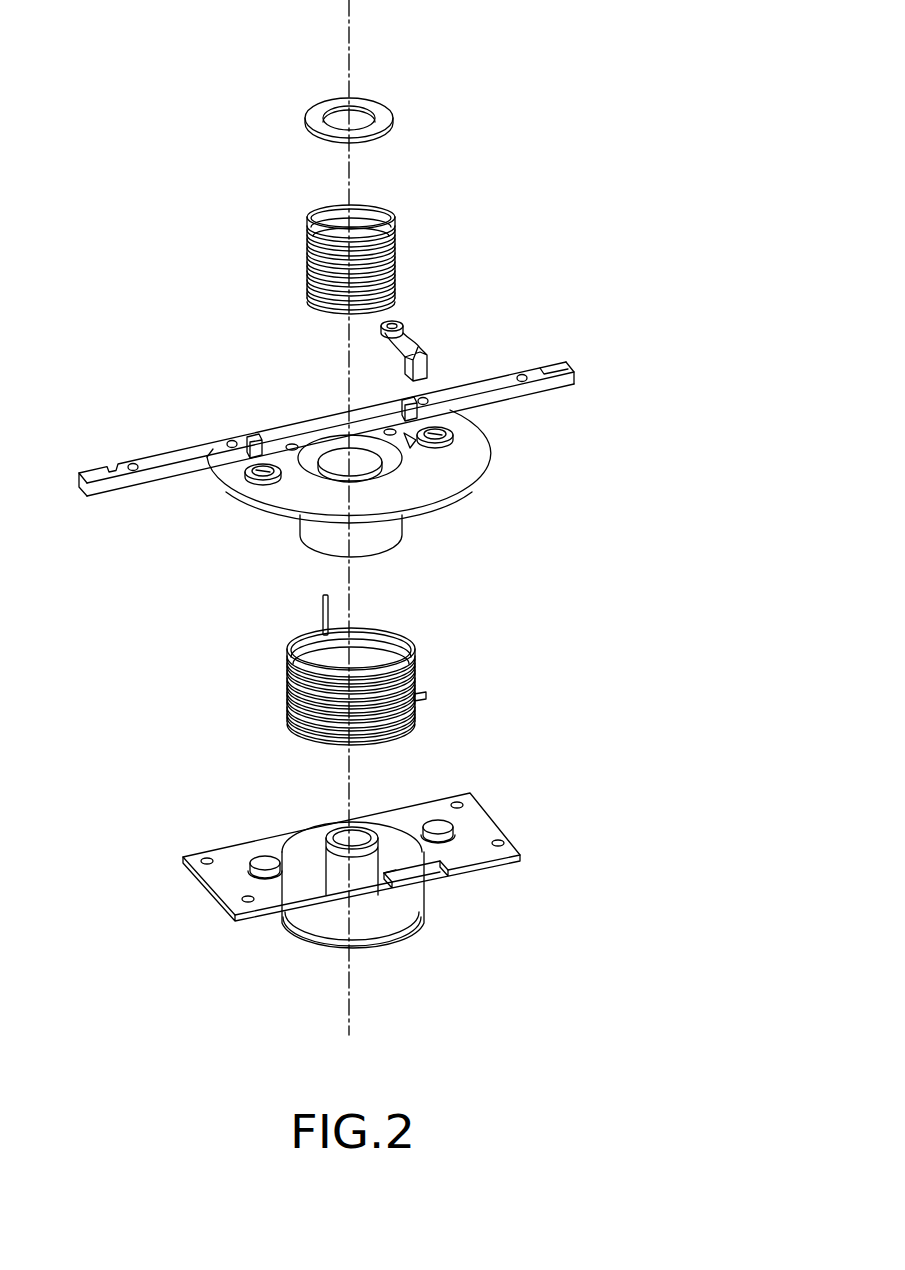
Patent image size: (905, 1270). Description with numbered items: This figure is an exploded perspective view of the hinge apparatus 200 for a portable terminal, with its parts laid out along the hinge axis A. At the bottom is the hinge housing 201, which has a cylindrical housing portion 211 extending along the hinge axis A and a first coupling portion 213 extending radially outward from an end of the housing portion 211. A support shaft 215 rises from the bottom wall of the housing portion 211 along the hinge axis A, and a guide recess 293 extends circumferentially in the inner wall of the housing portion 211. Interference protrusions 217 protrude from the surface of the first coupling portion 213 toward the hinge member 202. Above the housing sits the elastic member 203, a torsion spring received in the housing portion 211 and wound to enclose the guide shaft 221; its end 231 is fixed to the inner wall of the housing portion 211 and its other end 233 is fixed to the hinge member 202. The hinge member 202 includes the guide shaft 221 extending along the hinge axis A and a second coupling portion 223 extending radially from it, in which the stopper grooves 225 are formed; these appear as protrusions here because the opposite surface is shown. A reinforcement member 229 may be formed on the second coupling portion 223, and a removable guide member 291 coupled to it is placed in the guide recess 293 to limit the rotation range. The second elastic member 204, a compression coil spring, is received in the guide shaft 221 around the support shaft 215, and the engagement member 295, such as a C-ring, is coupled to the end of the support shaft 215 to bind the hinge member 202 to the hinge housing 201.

The hinge axis A is at (350, 42).
The hinge apparatus 200 is at (155, 227).
The hinge housing 201 is at (335, 865).
The hinge member 202 is at (356, 497).
The elastic member 203 is at (376, 670).
The second elastic member 204 is at (412, 224).
The housing portion 211 is at (385, 927).
The first coupling portion 213 is at (487, 830).
The support shaft 215 is at (325, 872).
The interference protrusions 217 is at (262, 858).
The guide shaft 221 is at (390, 538).
The second coupling portion 223 is at (298, 500).
The stopper grooves 225 is at (250, 463).
The reinforcement member 229 is at (160, 452).
The end of the elastic member 231 is at (428, 697).
The another end of the elastic member 233 is at (318, 606).
The guide member 291 is at (420, 340).
The guide recess 293 is at (455, 868).
The engagement member 295 is at (377, 110).